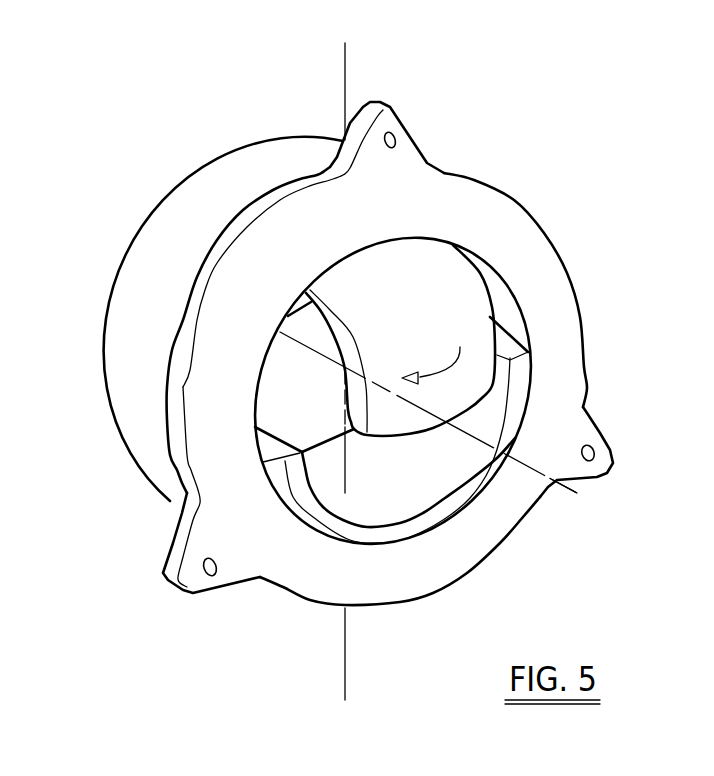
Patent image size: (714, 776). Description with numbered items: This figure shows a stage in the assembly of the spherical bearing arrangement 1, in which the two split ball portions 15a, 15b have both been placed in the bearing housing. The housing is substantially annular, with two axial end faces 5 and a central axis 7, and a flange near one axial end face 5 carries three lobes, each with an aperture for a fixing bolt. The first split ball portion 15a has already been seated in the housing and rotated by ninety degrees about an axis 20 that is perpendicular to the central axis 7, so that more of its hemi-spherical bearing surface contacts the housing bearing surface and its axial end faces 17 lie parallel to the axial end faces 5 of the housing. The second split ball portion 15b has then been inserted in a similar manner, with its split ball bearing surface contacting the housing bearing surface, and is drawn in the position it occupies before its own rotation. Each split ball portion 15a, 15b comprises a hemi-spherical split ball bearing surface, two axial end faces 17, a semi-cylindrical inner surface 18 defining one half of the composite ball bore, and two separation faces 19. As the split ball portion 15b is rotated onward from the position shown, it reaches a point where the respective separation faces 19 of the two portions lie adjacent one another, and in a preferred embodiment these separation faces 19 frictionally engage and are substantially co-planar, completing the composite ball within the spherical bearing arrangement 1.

The spherical bearing arrangement 1 is at (357, 376).
The axial end face 5 is at (487, 222).
The central axis 7 is at (133, 248).
The split ball portion 15a is at (398, 500).
The split ball portion 15b is at (463, 300).
The axial end face 17 is at (517, 395).
The semi-cylindrical inner surface 18 is at (452, 473).
The separation face 19 is at (507, 347).
The axis 20 is at (345, 62).